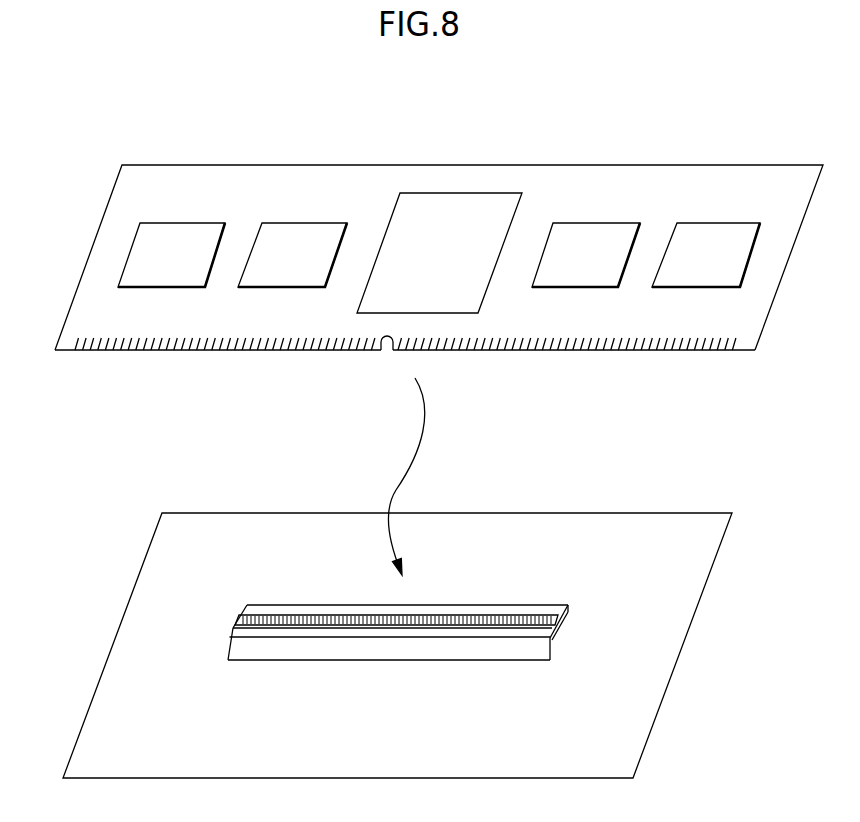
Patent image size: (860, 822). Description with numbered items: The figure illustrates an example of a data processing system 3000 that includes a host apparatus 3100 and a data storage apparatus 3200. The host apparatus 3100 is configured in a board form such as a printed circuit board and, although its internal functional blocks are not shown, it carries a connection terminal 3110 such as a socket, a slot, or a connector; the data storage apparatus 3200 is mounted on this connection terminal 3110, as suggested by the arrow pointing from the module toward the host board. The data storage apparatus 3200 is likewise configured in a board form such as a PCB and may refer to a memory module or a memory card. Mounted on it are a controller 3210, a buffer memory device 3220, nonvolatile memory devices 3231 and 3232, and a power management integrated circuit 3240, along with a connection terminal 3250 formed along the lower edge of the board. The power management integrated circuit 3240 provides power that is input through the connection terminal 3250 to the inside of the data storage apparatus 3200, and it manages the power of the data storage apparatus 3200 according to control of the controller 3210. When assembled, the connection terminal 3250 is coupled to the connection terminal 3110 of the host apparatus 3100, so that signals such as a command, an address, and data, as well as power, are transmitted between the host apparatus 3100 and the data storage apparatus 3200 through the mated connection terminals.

The data processing system 3000 is at (97, 124).
The data storage apparatus 3200 is at (439, 257).
The controller 3210 is at (439, 253).
The buffer memory device 3220 is at (292, 255).
The nonvolatile memory device 3231 is at (586, 255).
The nonvolatile memory device 3232 is at (706, 255).
The power management integrated circuit 3240 is at (171, 255).
The connection terminal 3250 is at (98, 352).
The host apparatus 3100 is at (397, 645).
The connection terminal 3110 is at (592, 600).